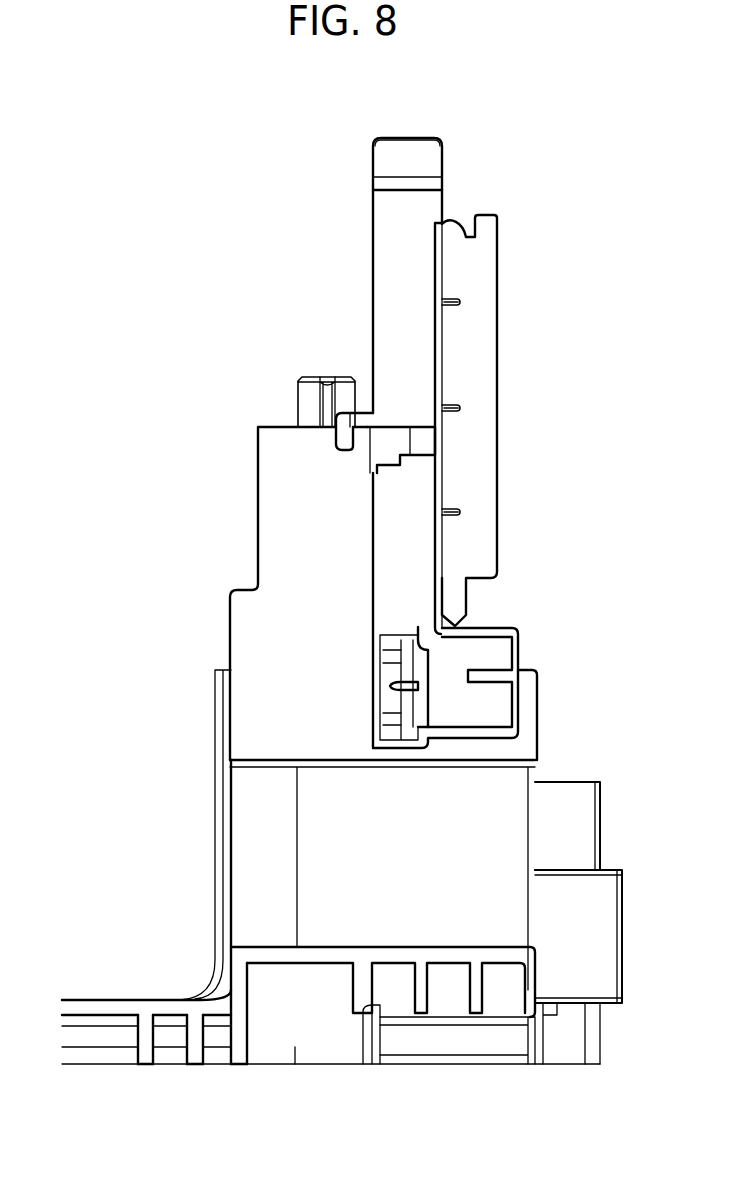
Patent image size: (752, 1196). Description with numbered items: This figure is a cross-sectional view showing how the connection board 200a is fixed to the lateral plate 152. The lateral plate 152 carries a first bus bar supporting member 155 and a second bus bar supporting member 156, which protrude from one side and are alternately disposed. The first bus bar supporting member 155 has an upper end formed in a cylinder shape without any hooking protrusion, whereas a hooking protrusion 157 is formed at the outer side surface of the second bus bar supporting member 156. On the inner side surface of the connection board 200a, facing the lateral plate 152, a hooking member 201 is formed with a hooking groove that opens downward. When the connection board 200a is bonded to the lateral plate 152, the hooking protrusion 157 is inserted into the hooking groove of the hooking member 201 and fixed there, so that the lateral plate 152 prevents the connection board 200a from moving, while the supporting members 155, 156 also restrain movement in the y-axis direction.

The connection board 200a is at (470, 166).
The hooking member 201 is at (352, 412).
The first bus bar supporting member 155 is at (307, 390).
The second bus bar supporting member 156 is at (258, 447).
The hooking protrusion 157 is at (362, 442).
The lateral plate 152 is at (600, 827).